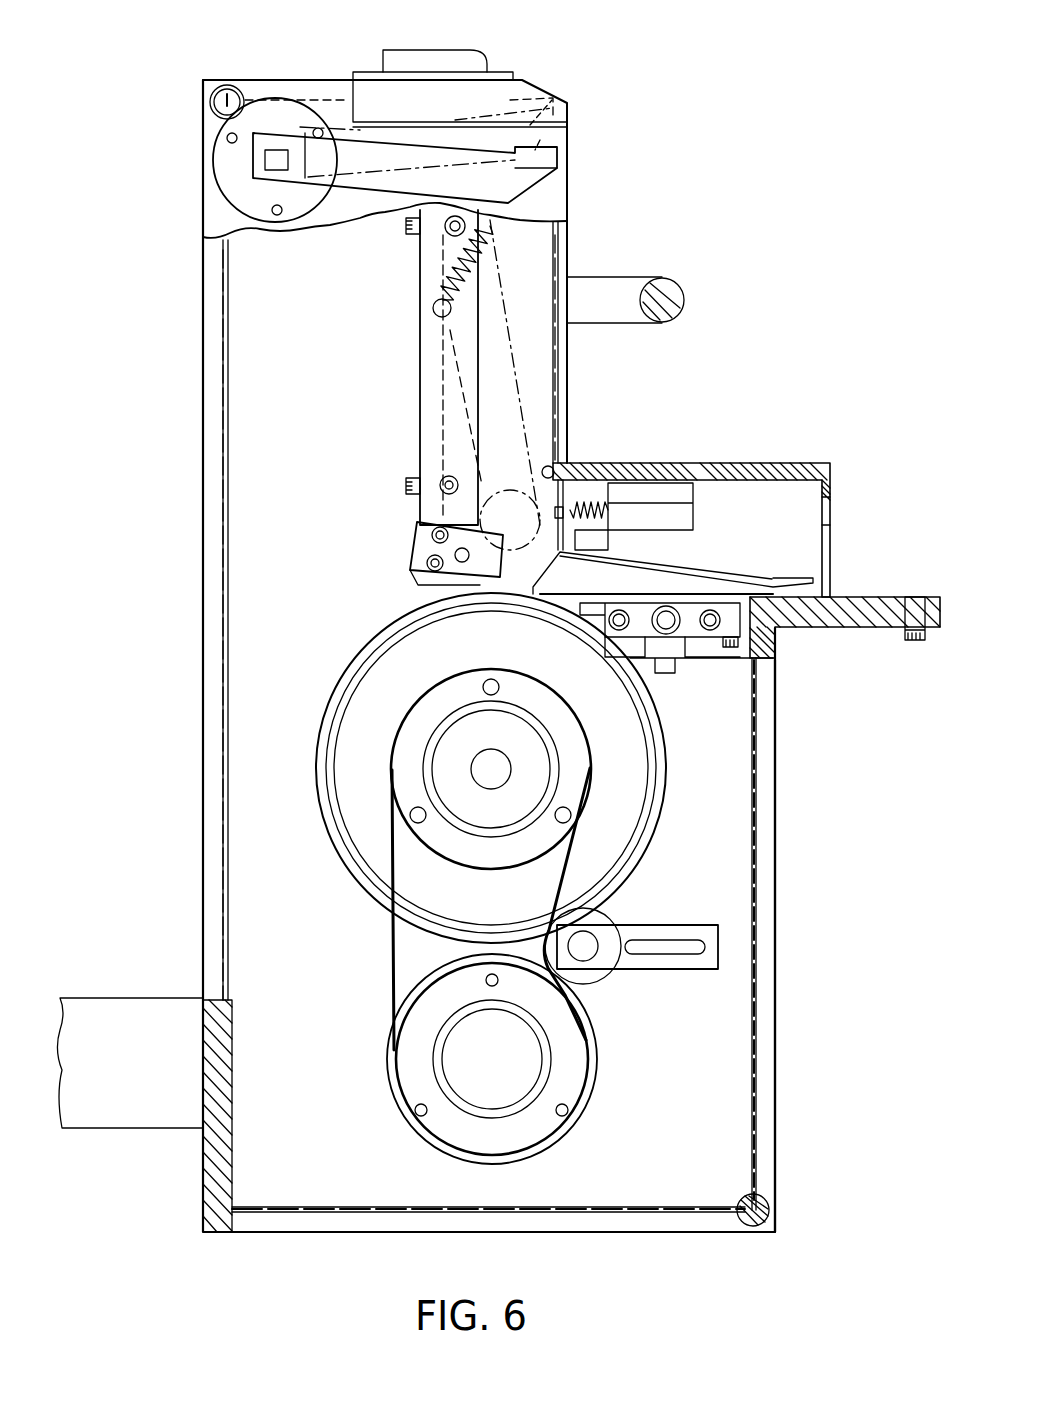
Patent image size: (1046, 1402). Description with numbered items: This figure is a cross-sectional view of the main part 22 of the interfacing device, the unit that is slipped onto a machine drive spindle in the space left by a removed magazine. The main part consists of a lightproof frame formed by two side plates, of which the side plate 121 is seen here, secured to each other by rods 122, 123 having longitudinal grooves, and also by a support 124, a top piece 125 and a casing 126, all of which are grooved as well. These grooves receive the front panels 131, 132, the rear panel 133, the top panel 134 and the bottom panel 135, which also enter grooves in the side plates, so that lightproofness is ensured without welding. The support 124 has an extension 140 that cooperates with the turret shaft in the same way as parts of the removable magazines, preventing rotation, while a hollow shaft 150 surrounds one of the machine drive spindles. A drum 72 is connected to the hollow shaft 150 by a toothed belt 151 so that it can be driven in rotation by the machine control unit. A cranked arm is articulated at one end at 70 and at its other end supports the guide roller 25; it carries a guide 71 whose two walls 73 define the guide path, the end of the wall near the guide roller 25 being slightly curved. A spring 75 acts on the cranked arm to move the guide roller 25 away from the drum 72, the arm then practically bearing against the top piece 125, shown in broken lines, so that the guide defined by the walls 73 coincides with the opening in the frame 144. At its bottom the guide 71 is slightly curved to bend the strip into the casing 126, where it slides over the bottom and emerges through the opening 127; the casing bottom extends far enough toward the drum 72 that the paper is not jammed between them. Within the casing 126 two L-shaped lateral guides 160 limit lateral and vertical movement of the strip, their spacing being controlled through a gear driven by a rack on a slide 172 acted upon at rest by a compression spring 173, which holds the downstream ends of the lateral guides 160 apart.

The main part 22 is at (172, 487).
The guide roller 25 is at (418, 542).
The articulation of the cranked arm 70 is at (268, 162).
The guide 71 is at (428, 418).
The drum 72 is at (372, 645).
The walls 73 is at (420, 350).
The spring 75 is at (490, 265).
The side plate 121 is at (305, 958).
The rod 122 is at (772, 1204).
The rod 123 is at (237, 82).
The support 124 is at (213, 1188).
The top piece 125 is at (560, 103).
The casing 126 is at (780, 452).
The opening 127 is at (843, 590).
The front panel 131 is at (776, 962).
The front panel 132 is at (560, 354).
The rear panel 133 is at (203, 352).
The top panel 134 is at (317, 95).
The bottom panel 135 is at (298, 1204).
The extension 140 is at (104, 998).
The opening in the frame 144 is at (487, 55).
The hollow shaft 150 is at (598, 1104).
The toothed belt 151 is at (608, 896).
The lateral guide 160 is at (680, 578).
The slide 172 is at (592, 478).
The compression spring 173 is at (640, 470).